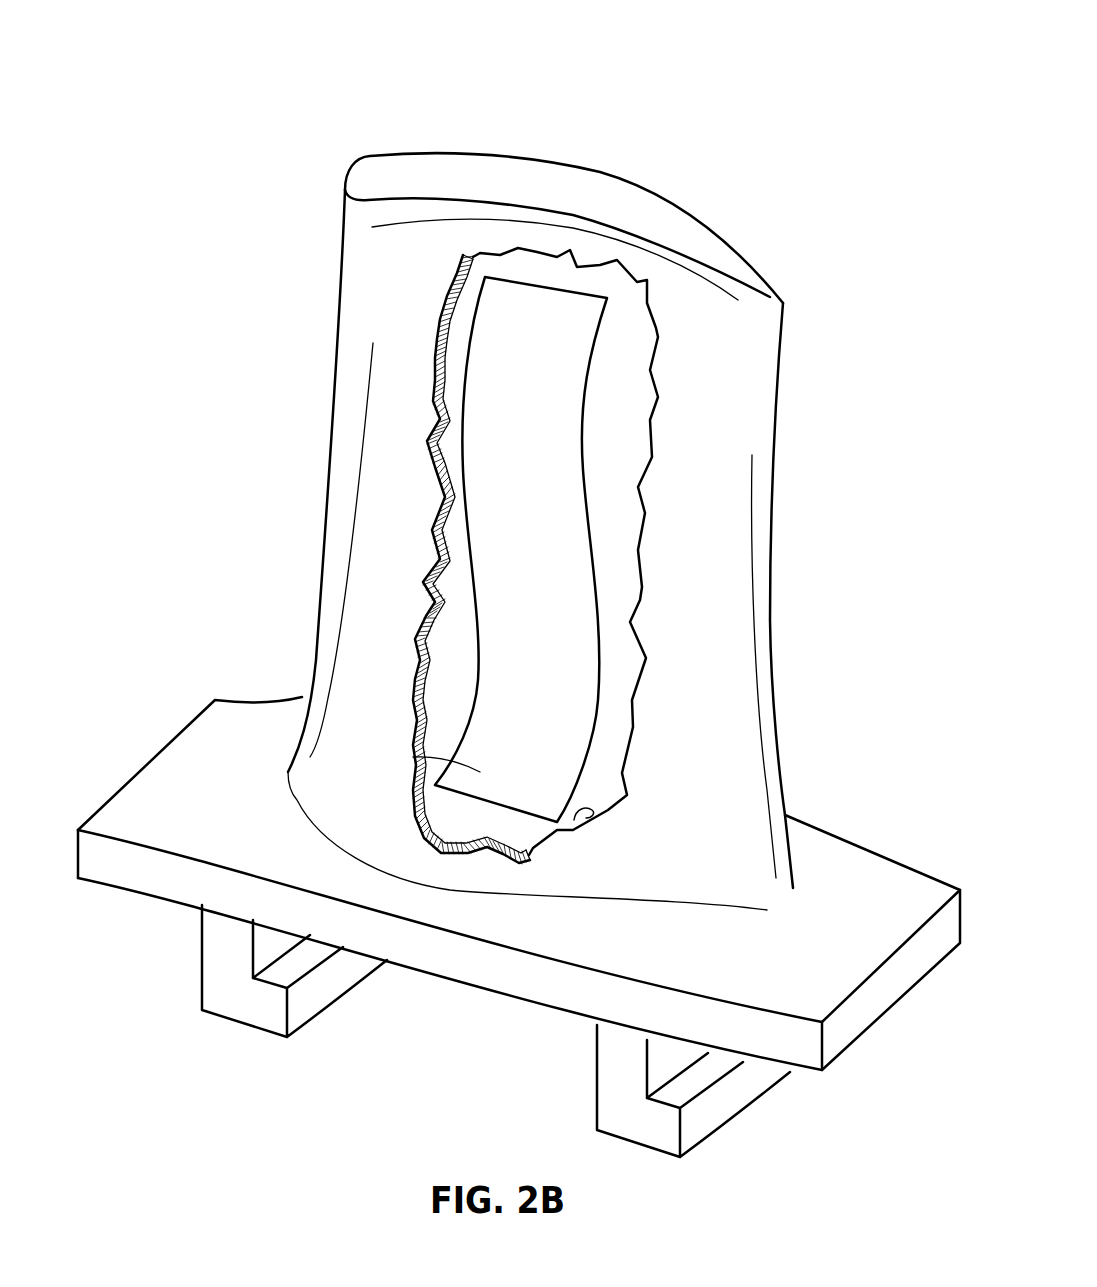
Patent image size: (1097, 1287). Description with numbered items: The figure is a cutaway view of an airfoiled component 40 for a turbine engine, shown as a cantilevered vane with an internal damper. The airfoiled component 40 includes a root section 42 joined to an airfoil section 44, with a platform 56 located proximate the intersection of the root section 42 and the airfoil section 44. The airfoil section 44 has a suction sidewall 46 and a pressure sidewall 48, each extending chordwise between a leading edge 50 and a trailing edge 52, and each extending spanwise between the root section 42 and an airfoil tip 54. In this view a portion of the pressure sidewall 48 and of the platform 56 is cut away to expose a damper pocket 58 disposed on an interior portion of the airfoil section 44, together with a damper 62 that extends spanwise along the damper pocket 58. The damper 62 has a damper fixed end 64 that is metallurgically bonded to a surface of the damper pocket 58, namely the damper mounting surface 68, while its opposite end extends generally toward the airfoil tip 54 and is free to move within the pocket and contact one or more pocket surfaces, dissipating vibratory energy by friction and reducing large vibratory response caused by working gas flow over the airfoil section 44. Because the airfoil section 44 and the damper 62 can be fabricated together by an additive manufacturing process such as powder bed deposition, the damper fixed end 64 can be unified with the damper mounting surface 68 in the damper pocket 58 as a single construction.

The airfoiled component 40 is at (852, 152).
The root section 42 is at (850, 1115).
The airfoil section 44 is at (113, 470).
The suction sidewall 46 is at (320, 345).
The pressure sidewall 48 is at (410, 537).
The leading edge 50 is at (320, 612).
The trailing edge 52 is at (772, 620).
The airfoil tip 54 is at (815, 348).
The platform 56 is at (103, 764).
The damper pocket 58 is at (480, 255).
The damper 62 is at (526, 305).
The damper fixed end 64 is at (423, 782).
The damper mounting surface 68 is at (577, 797).